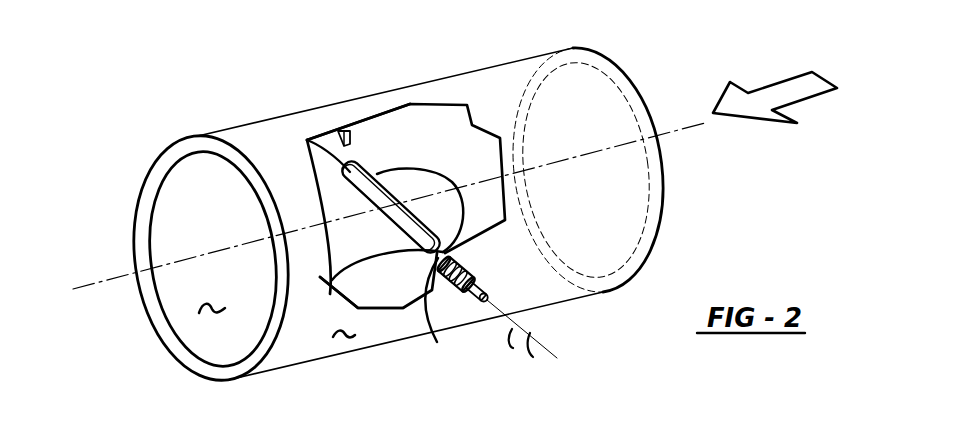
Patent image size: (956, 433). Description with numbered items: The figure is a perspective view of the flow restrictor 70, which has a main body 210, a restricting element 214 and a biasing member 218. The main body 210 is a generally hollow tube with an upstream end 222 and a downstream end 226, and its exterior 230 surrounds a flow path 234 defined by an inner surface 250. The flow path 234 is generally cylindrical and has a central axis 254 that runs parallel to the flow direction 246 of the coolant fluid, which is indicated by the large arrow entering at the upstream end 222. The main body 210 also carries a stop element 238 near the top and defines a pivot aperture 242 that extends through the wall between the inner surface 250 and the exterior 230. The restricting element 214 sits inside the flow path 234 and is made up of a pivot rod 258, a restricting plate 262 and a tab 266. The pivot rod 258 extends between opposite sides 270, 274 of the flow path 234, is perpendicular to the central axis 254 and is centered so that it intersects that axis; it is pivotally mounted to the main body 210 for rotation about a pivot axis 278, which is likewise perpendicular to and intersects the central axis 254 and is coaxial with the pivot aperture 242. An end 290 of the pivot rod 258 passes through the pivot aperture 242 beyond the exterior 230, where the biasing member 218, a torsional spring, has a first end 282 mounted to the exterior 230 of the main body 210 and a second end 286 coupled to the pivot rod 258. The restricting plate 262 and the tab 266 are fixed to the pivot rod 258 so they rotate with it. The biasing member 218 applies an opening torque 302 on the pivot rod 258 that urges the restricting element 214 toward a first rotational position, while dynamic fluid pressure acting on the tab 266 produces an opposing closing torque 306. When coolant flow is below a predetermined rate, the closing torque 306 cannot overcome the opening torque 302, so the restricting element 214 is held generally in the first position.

The flow restrictor 70 is at (145, 117).
The main body 210 is at (229, 128).
The restricting element 214 is at (384, 147).
The biasing member 218 is at (452, 303).
The upstream end 222 is at (603, 64).
The downstream end 226 is at (193, 359).
The exterior 230 is at (347, 341).
The flow path 234 is at (150, 197).
The stop element 238 is at (340, 133).
The pivot aperture 242 is at (445, 253).
The flow direction 246 is at (807, 100).
The inner surface 250 is at (202, 310).
The central axis 254 is at (90, 282).
The pivot rod 258 is at (355, 301).
The restricting plate 262 is at (413, 183).
The tab 266 is at (372, 190).
The first side 270 is at (307, 140).
The second side 274 is at (442, 313).
The pivot axis 278 is at (556, 360).
The first end 282 is at (457, 250).
The second end 286 is at (470, 275).
The end of pivot rod 290 is at (478, 293).
The opening torque 302 is at (524, 326).
The closing torque 306 is at (531, 338).